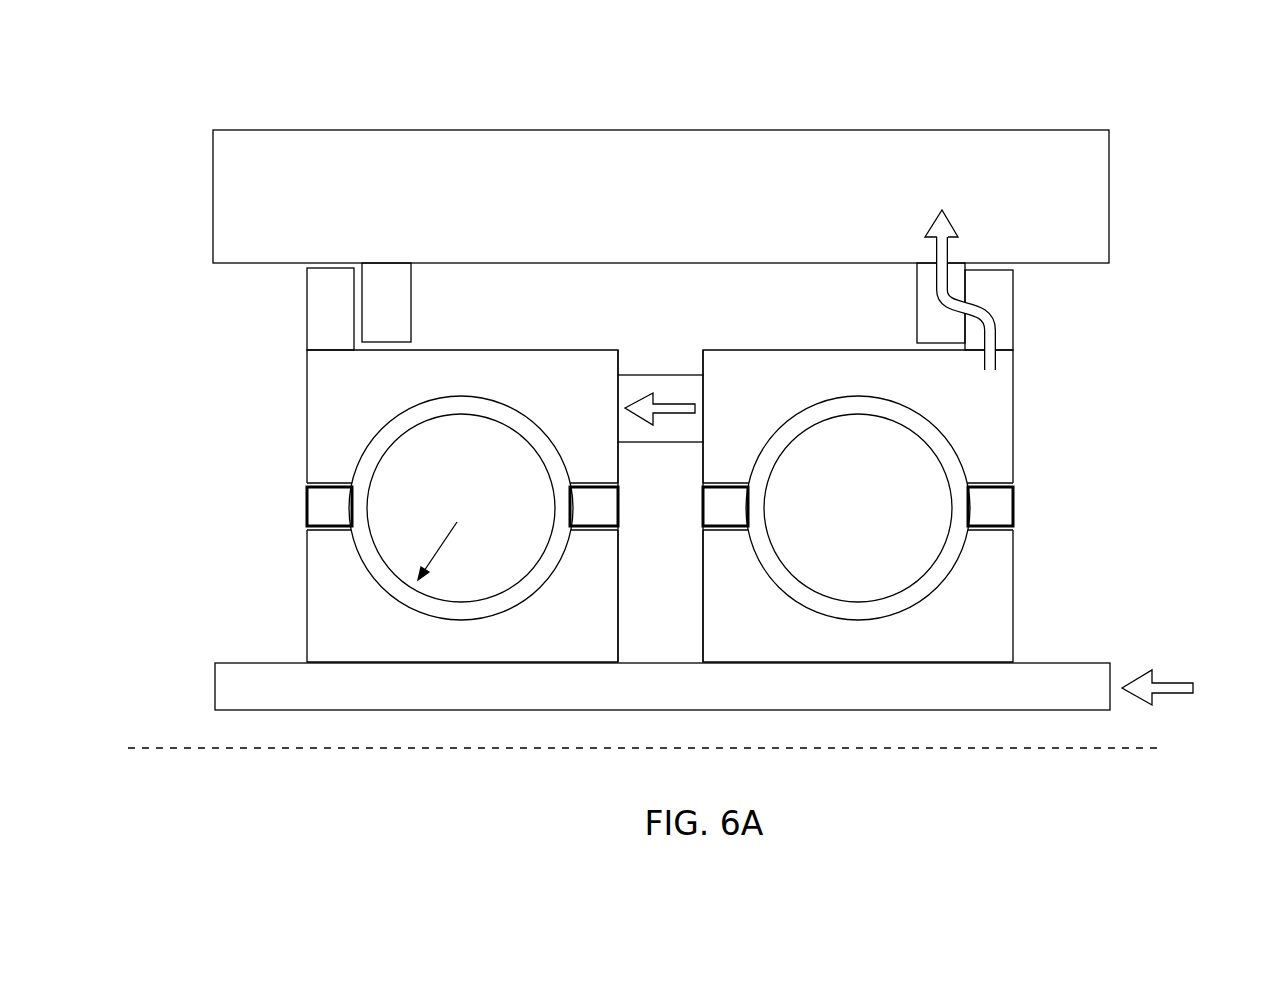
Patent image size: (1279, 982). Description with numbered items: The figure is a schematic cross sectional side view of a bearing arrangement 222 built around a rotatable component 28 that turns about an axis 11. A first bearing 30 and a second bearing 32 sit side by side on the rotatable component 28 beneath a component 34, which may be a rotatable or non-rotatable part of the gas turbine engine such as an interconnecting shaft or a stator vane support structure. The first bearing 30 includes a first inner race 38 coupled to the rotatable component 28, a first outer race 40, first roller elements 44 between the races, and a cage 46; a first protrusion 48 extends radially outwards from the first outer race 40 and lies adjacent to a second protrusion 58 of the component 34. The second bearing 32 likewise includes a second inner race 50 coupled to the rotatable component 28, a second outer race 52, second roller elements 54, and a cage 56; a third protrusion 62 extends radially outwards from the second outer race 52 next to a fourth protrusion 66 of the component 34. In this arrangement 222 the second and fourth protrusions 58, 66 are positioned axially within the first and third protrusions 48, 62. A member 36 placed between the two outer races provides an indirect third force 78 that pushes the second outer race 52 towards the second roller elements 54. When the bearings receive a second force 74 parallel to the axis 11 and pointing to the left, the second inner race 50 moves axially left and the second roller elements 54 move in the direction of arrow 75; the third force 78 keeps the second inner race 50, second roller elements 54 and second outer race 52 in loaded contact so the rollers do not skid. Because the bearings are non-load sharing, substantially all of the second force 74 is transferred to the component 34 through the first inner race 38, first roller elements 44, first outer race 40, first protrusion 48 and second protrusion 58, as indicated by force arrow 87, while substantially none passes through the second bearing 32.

The axis 11 is at (342, 748).
The rotatable component 28 is at (216, 690).
The first bearing 30 is at (1026, 507).
The second bearing 32 is at (290, 508).
The component 34 is at (710, 129).
The member 36 is at (647, 375).
The first inner race 38 is at (1007, 606).
The first outer race 40 is at (1007, 406).
The first roller elements 44 is at (841, 521).
The cage 46 is at (722, 512).
The first protrusion 48 is at (1008, 300).
The second inner race 50 is at (316, 620).
The second outer race 52 is at (316, 405).
The second roller elements 54 is at (444, 521).
The cage 56 is at (608, 506).
The second protrusion 58 is at (917, 302).
The third protrusion 62 is at (316, 300).
The fourth protrusion 66 is at (400, 300).
The second force 74 is at (1170, 683).
The arrow 75 is at (447, 536).
The indirect third force 78 is at (662, 398).
The force arrow 87 is at (948, 222).
The bearing arrangement 222 is at (1198, 158).